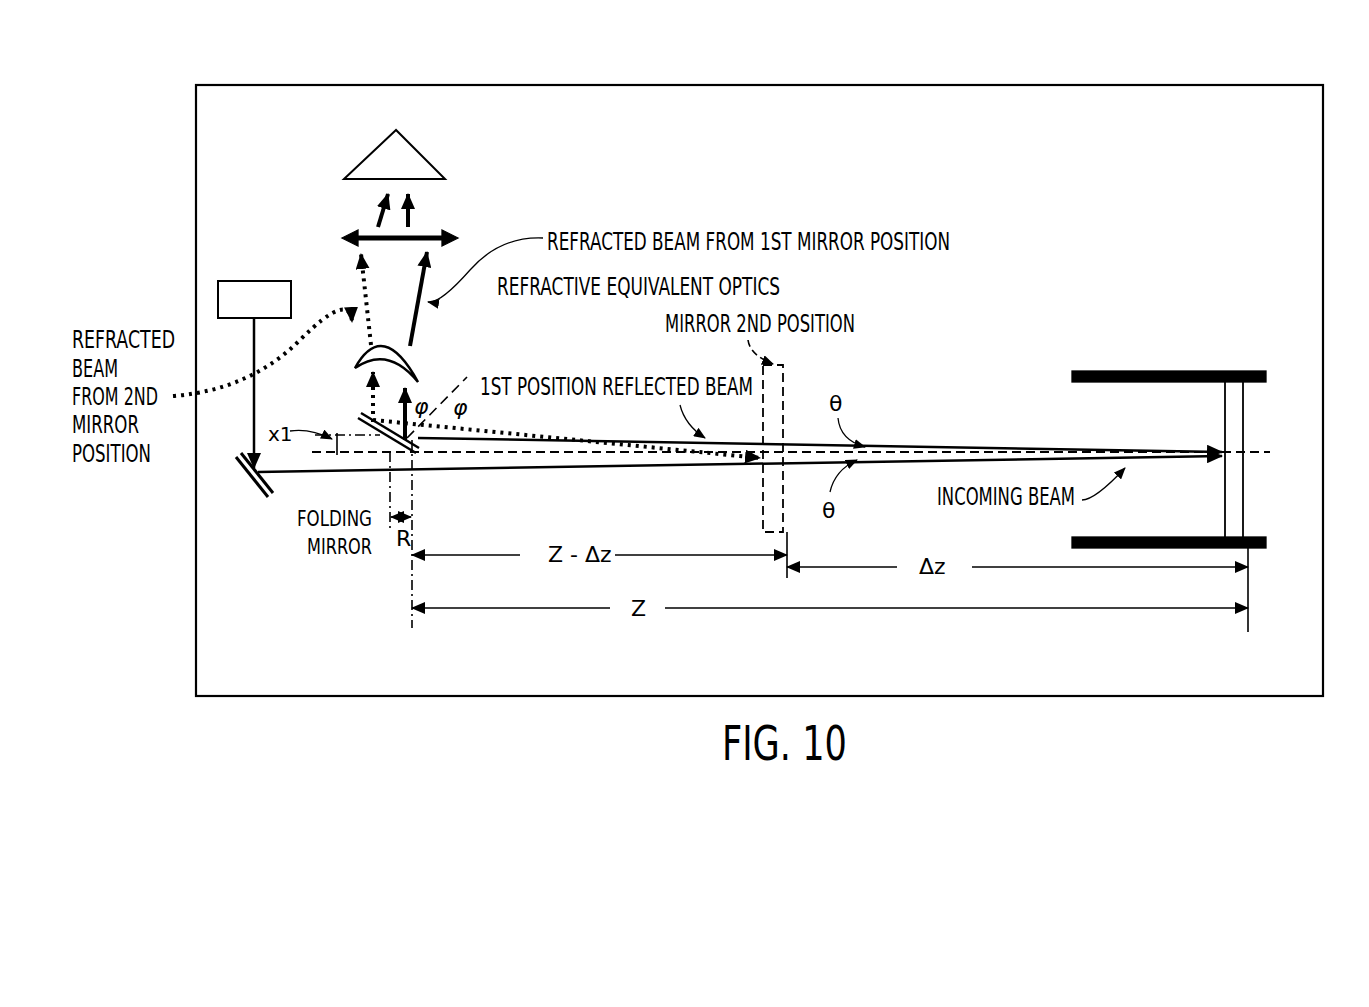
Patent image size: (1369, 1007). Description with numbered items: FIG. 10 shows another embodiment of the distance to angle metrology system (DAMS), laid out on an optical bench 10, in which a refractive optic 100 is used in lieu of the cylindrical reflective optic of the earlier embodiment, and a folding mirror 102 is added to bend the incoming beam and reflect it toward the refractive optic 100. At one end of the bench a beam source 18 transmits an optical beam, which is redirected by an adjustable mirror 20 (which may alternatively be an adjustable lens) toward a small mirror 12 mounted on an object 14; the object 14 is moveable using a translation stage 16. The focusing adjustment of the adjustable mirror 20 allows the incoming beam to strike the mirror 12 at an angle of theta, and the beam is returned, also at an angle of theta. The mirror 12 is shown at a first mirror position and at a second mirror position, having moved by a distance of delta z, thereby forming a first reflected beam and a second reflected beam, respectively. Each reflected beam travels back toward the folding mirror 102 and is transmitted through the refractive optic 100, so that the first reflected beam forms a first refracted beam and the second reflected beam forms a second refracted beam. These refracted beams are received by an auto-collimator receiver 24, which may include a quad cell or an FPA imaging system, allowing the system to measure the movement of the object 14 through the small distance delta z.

The distance to angle metrology system (DAMS) 10 is at (718, 84).
The small mirror 12 is at (1222, 425).
The object 14 is at (1238, 427).
The translation stage 16 is at (1165, 371).
The beam source 18 is at (262, 300).
The adjustable mirror 20 is at (248, 490).
The auto-collimator receiver 24 is at (427, 155).
The refractive optic 100 is at (422, 364).
The folding mirror 102 is at (382, 452).